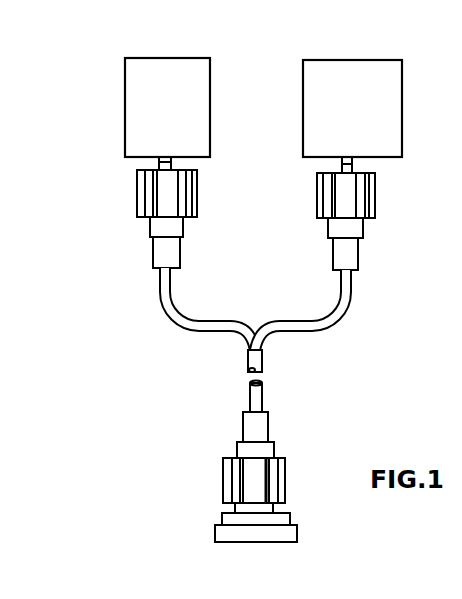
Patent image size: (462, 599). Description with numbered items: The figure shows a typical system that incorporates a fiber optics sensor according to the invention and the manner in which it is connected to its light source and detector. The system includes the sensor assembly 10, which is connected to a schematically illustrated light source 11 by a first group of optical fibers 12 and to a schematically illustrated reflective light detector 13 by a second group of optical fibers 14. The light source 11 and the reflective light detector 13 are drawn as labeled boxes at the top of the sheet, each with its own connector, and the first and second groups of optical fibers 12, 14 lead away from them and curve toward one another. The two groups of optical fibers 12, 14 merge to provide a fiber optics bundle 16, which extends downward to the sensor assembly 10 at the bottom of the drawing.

The sensor assembly 10 is at (297, 502).
The light source 11 is at (202, 132).
The first group of optical fibers 12 is at (193, 333).
The reflective light detector 13 is at (395, 108).
The second group of optical fibers 14 is at (351, 297).
The fiber optics bundle 16 is at (263, 395).